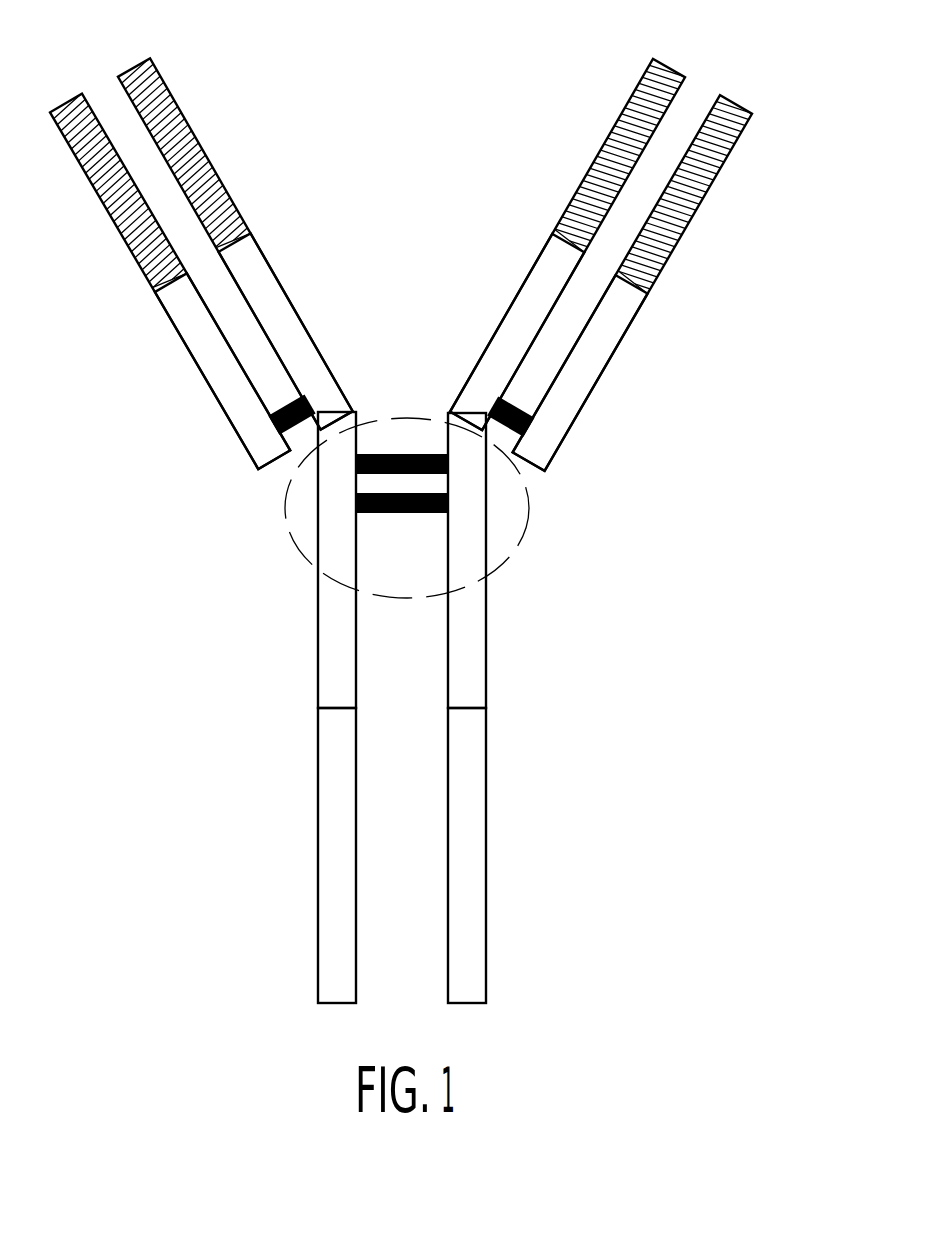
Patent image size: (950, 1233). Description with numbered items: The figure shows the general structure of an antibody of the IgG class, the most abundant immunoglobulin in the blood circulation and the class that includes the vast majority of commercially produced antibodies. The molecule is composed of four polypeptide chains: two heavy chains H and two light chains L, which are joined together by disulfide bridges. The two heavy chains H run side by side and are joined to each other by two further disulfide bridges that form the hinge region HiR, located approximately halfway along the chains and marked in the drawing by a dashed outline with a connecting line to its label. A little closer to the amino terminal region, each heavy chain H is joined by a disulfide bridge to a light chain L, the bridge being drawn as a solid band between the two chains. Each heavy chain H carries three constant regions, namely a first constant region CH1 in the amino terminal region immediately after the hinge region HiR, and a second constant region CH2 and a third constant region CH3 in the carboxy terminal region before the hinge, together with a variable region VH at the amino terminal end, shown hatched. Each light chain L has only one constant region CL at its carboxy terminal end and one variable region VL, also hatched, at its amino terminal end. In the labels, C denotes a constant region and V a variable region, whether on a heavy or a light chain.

The heavy chain H is at (410, 218).
The light chain L is at (405, 259).
The heavy chain variable region VH is at (401, 162).
The light chain variable region VL is at (400, 197).
The first heavy chain constant region CH1 is at (402, 331).
The light chain constant region CL is at (401, 362).
The second heavy chain constant region CH2 is at (440, 560).
The third heavy chain constant region CH3 is at (440, 855).
The hinge region HiR is at (529, 509).